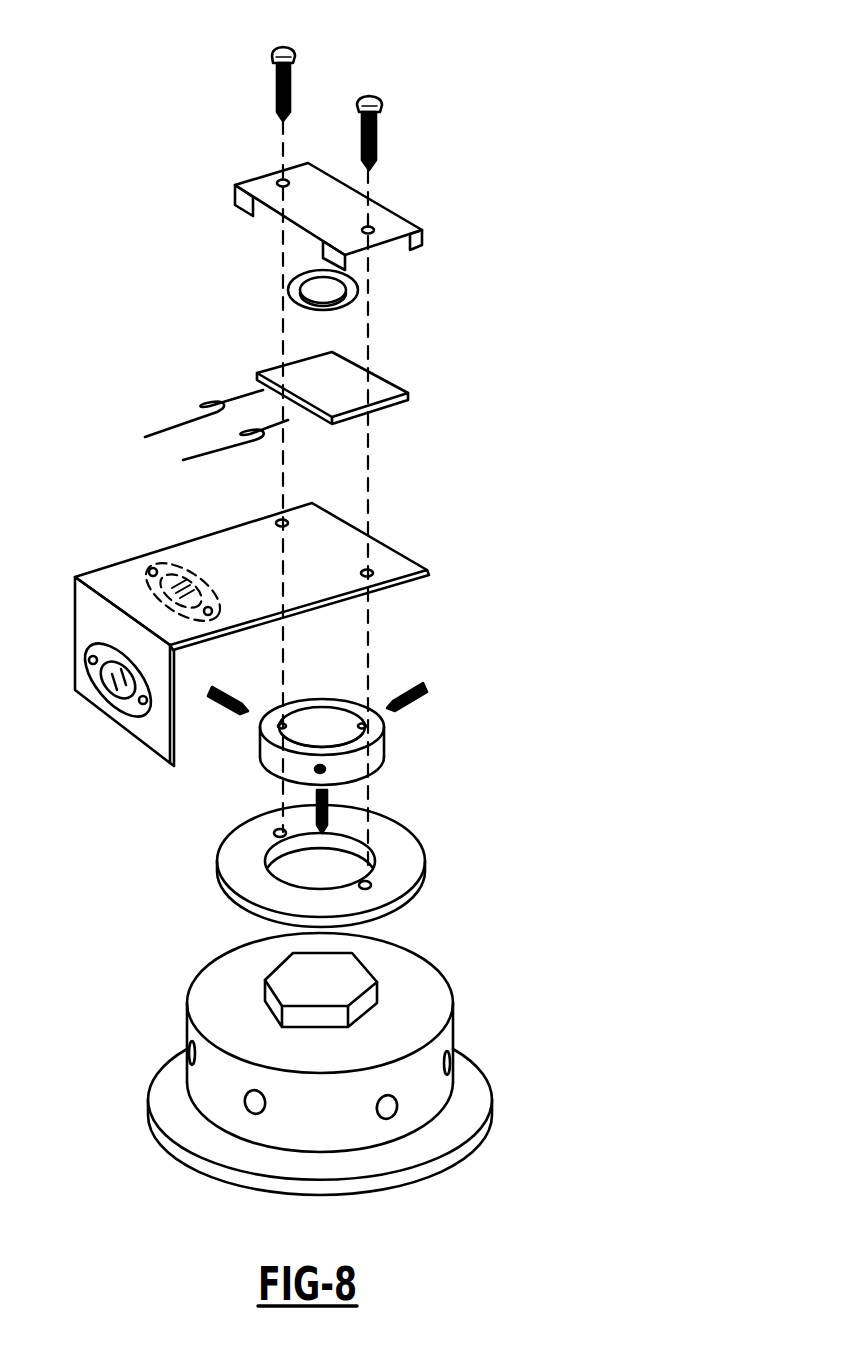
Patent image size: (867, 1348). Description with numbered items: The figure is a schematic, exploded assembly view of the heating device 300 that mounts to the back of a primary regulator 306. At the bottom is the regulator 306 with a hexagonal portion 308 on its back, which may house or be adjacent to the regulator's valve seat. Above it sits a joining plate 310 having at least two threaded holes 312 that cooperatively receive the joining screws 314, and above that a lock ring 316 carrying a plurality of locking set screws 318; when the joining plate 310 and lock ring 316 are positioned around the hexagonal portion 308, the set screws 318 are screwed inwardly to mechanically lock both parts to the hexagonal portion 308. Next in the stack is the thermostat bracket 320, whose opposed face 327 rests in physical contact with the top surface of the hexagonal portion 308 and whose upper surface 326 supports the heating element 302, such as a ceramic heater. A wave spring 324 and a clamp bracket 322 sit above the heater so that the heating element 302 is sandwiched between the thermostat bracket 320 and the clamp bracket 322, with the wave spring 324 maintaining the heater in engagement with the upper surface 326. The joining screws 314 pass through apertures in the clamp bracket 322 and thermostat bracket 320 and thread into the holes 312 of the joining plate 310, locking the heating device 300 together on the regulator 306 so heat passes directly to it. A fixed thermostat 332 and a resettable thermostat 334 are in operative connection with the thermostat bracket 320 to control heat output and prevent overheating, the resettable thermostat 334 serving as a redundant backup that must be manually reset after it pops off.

The heating device 300 is at (142, 124).
The heating element 302 is at (375, 407).
The primary regulator 306 is at (455, 990).
The hexagonal portion 308 is at (352, 975).
The joining plate 310 is at (402, 852).
The threaded holes 312 is at (283, 835).
The joining screws 314 is at (368, 97).
The lock ring 316 is at (375, 737).
The locking set screws 318 is at (420, 688).
The thermostat bracket 320 is at (400, 567).
The clamp bracket 322 is at (425, 235).
The wave spring 324 is at (355, 293).
The upper surface 326 is at (327, 535).
The opposed face 327 is at (360, 612).
The fixed thermostat 332 is at (198, 560).
The resettable thermostat 334 is at (128, 716).